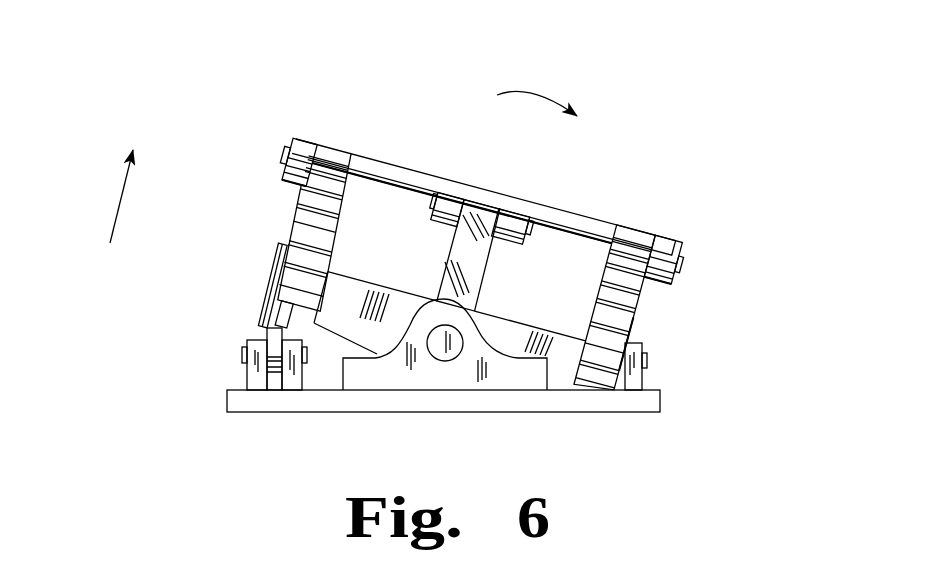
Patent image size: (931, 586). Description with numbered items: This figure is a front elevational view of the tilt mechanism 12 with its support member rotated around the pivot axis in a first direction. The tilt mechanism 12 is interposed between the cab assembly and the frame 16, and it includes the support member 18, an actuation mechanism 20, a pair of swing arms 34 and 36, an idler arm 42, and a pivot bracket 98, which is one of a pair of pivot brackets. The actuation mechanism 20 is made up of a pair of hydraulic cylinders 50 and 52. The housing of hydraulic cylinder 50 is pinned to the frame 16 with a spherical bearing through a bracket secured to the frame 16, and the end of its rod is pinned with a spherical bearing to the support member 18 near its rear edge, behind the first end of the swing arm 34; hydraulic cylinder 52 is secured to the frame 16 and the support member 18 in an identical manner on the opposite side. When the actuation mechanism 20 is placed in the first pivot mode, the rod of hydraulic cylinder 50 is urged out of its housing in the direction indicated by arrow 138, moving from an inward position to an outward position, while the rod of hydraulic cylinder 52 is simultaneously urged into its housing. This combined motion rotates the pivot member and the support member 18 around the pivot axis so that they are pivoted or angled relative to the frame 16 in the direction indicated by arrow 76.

The tilt mechanism 12 is at (180, 112).
The frame 16 is at (237, 400).
The support member 18 is at (580, 220).
The actuation mechanism 20 is at (663, 348).
The swing arm 34 is at (304, 214).
The swing arm 36 is at (625, 302).
The idler arm 42 is at (476, 263).
The hydraulic cylinder 50 is at (250, 263).
The hydraulic cylinder 52 is at (632, 328).
The arrow 76 is at (530, 92).
The pivot bracket 98 is at (375, 379).
The arrow 138 is at (117, 213).